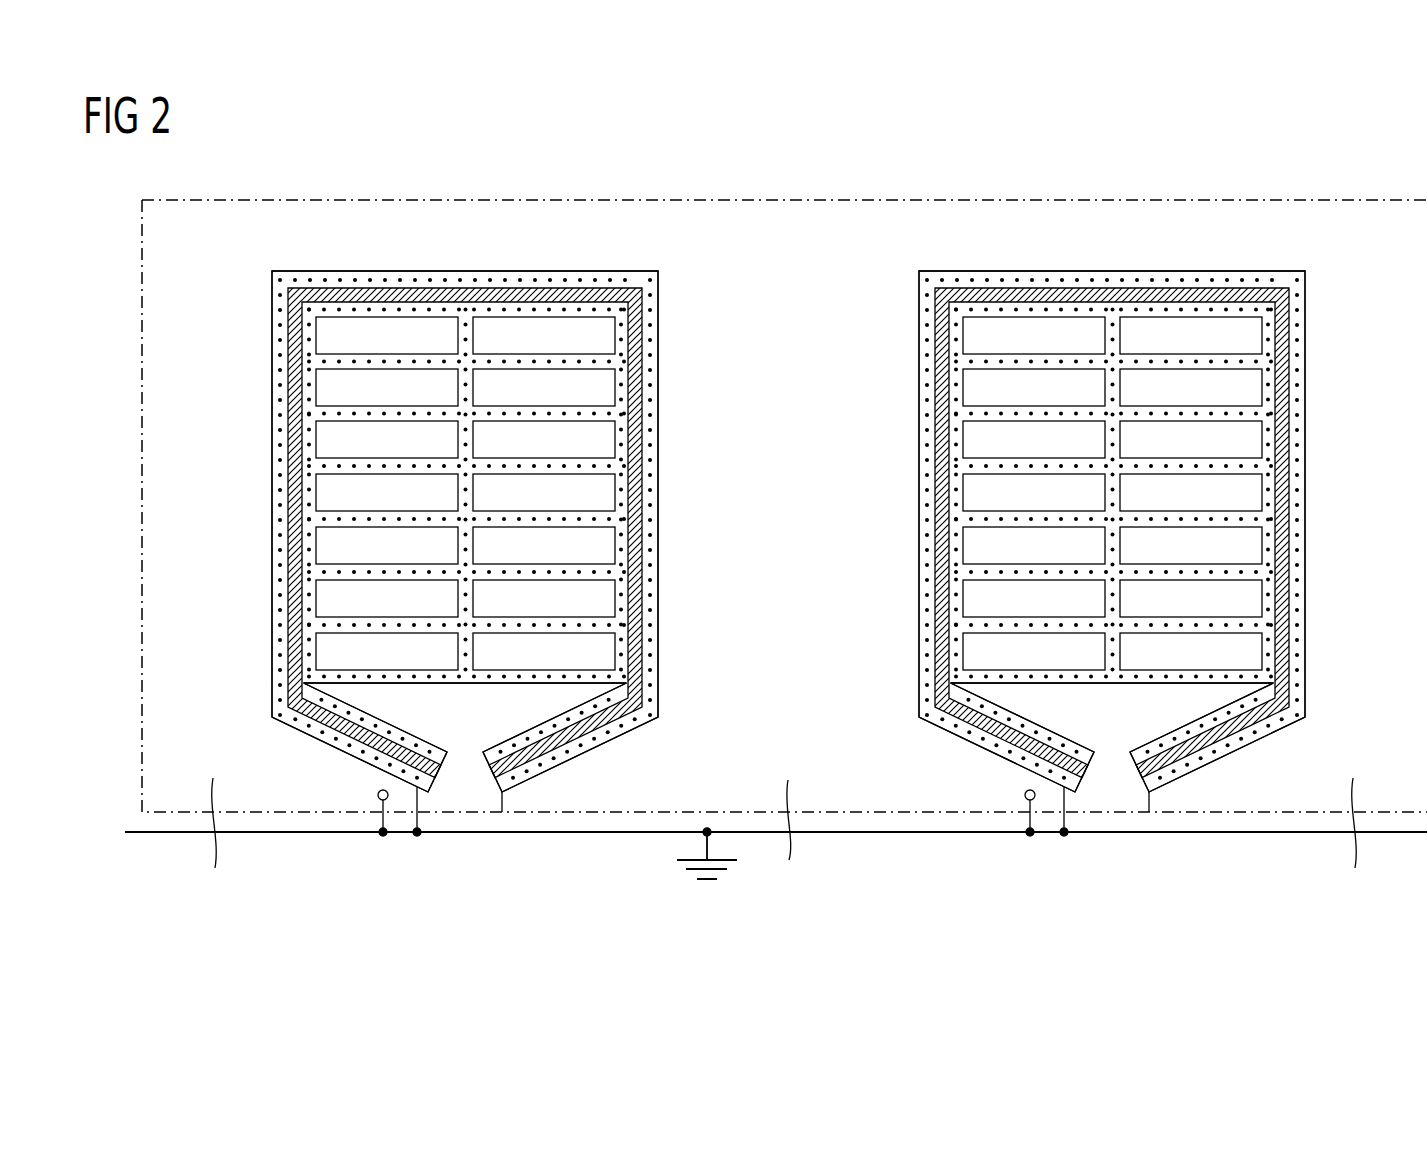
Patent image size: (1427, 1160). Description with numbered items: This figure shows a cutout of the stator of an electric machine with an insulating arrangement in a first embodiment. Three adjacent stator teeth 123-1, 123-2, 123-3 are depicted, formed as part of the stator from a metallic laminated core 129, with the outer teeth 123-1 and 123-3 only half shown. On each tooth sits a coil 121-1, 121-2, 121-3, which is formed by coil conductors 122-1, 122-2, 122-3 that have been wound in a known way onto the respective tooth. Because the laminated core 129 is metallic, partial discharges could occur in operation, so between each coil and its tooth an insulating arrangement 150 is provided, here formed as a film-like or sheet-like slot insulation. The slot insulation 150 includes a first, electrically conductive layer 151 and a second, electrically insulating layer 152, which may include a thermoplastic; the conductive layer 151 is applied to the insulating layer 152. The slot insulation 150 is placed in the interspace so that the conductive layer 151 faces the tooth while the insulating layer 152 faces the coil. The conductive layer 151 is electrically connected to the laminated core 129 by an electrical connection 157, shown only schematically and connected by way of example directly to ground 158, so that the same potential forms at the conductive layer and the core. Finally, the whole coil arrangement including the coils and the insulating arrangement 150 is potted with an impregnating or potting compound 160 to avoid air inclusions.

The laminated core 129 is at (618, 215).
The coil 121-1 is at (336, 226).
The coil 121-2 is at (908, 597).
The coil 121-3 is at (1253, 226).
The insulating arrangement 150 is at (456, 268).
The first electrically conductive layer 151 is at (536, 290).
The second electrically insulating layer 152 is at (635, 311).
The impregnating or potting compound 160 is at (655, 443).
The coil conductors 122-1 is at (330, 337).
The coil conductors 122-2 is at (595, 384).
The coil conductors 122-3 is at (1243, 387).
The stator tooth 123-1 is at (216, 840).
The stator tooth 123-2 is at (791, 842).
The stator tooth 123-3 is at (1356, 840).
The electrical connection 157 is at (535, 834).
The ground 158 is at (710, 882).